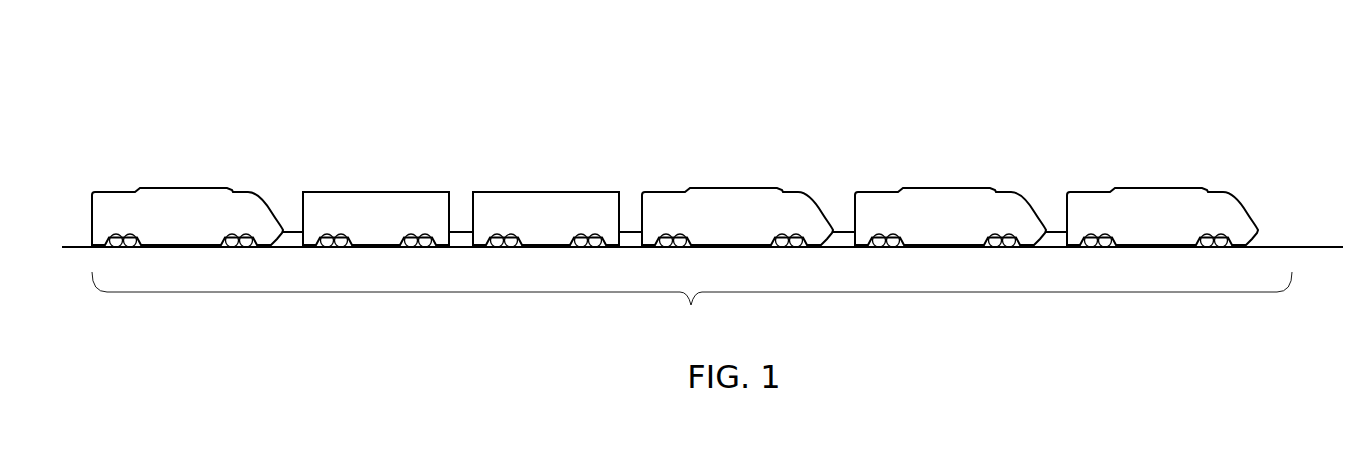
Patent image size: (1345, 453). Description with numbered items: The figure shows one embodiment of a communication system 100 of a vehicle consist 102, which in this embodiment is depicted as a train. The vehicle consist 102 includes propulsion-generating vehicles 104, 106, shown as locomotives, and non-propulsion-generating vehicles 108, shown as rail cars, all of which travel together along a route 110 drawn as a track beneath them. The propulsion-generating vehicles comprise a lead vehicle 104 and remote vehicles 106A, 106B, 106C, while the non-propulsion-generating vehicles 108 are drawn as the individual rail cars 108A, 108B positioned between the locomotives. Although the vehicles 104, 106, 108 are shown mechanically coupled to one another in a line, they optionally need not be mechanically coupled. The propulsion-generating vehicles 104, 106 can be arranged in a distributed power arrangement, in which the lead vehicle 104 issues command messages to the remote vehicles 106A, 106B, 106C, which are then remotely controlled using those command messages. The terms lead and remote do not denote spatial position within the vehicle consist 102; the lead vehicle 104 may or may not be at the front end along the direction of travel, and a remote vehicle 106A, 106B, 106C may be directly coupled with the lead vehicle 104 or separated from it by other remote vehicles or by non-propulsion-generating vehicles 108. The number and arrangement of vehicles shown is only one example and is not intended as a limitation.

The communication system 100 is at (1171, 58).
The vehicle consist 102 is at (692, 304).
The lead vehicle 104 is at (1153, 188).
The propulsion-generating vehicles 106 is at (1013, 171).
The remote vehicle 106A is at (940, 188).
The remote vehicle 106B is at (730, 188).
The remote vehicle 106C is at (178, 188).
The non-propulsion-generating vehicles 108 is at (599, 170).
The non-propulsion-generating vehicle 108A is at (545, 192).
The non-propulsion-generating vehicle 108B is at (376, 192).
The route 110 is at (1300, 246).